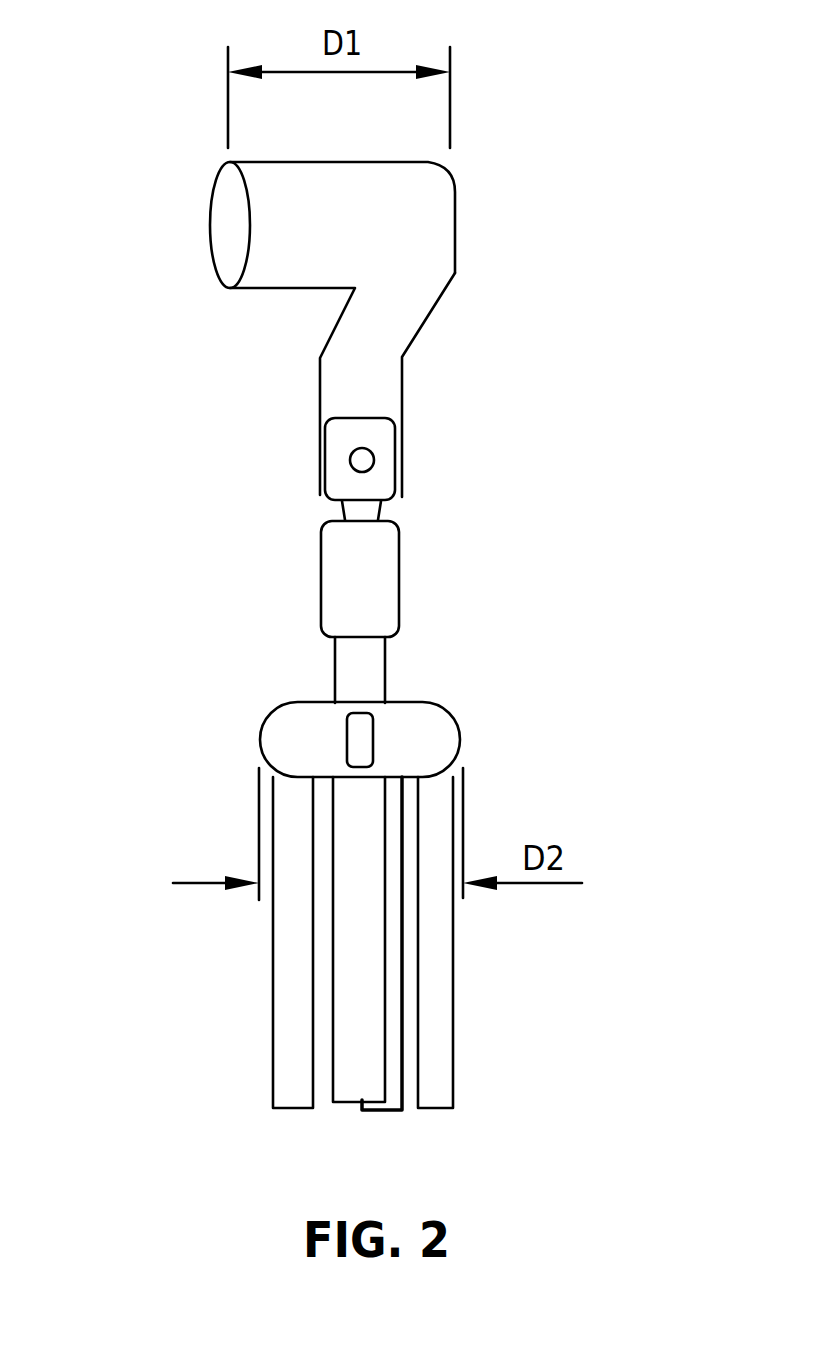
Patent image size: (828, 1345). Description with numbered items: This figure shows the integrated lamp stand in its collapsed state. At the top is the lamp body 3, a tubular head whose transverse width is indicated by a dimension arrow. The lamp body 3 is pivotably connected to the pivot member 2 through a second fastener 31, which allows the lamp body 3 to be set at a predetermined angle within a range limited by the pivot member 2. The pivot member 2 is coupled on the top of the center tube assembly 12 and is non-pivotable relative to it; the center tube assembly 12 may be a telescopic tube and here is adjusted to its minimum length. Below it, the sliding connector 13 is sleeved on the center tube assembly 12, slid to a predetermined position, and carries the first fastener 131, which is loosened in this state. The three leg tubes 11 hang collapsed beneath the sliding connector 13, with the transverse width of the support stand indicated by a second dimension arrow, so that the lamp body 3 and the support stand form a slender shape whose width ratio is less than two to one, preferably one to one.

The lamp body 3 is at (455, 230).
The second fastener 31 is at (350, 462).
The pivot member 2 is at (395, 447).
The center tube assembly 12 is at (385, 667).
The sliding connector 13 is at (262, 737).
The first fastener 131 is at (373, 747).
The leg tubes 11 is at (453, 912).